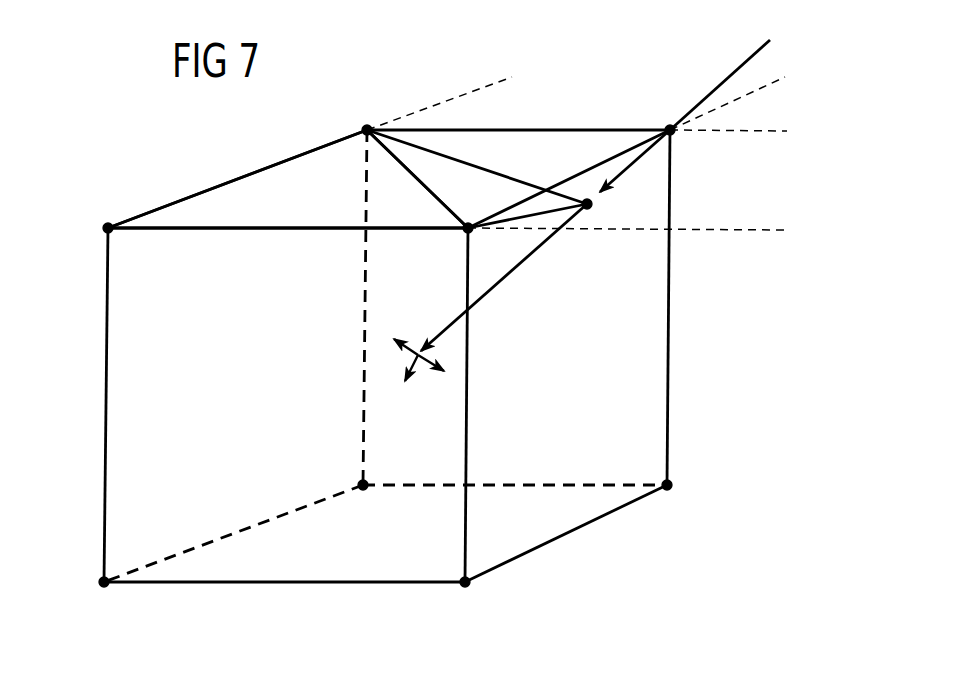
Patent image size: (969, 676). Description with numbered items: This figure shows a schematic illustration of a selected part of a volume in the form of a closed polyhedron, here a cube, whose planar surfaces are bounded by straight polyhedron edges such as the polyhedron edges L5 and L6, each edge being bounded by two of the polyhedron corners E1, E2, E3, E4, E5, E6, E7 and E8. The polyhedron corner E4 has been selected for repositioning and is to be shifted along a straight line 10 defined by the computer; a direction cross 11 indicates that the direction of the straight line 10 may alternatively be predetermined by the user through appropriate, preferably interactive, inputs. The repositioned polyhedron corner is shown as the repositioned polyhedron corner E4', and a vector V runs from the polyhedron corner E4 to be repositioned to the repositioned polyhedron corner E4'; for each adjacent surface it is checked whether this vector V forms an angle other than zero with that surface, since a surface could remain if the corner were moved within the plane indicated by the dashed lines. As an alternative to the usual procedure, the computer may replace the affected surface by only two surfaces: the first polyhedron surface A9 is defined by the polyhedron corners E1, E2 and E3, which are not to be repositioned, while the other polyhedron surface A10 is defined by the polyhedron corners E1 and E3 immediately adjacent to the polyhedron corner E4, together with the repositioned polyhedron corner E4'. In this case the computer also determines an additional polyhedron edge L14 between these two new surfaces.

The polyhedron corner E1 is at (363, 127).
The polyhedron corner E2 is at (105, 224).
The polyhedron corner E3 is at (464, 233).
The polyhedron corner E4 is at (695, 152).
The repositioned polyhedron corner E4' is at (608, 234).
The polyhedron corner E5 is at (359, 482).
The polyhedron corner E6 is at (107, 585).
The polyhedron corner E7 is at (467, 587).
The polyhedron corner E8 is at (671, 483).
The polyhedron edge L5 is at (223, 185).
The polyhedron edge L6 is at (257, 230).
The additional polyhedron edge L14 is at (403, 180).
The first polyhedron surface A9 is at (290, 197).
The other polyhedron surface A10 is at (550, 203).
The vector V is at (627, 167).
The straight line 10 is at (525, 262).
The direction cross 11 is at (427, 367).